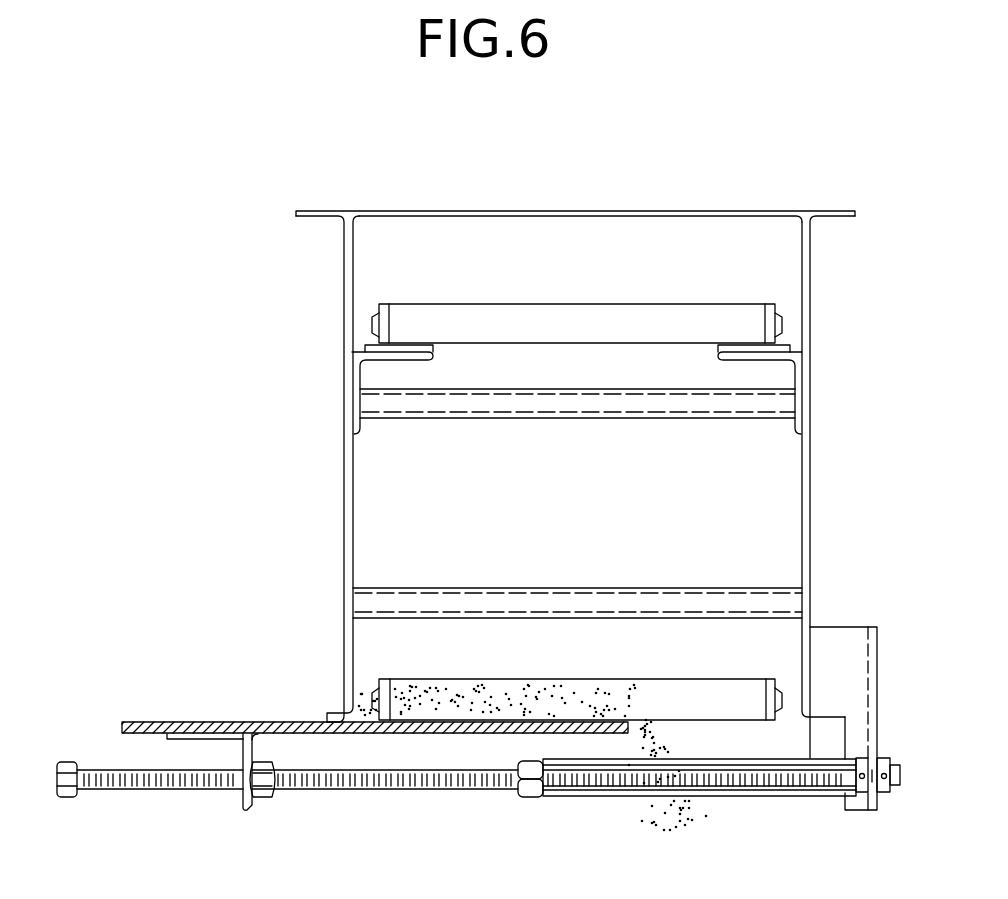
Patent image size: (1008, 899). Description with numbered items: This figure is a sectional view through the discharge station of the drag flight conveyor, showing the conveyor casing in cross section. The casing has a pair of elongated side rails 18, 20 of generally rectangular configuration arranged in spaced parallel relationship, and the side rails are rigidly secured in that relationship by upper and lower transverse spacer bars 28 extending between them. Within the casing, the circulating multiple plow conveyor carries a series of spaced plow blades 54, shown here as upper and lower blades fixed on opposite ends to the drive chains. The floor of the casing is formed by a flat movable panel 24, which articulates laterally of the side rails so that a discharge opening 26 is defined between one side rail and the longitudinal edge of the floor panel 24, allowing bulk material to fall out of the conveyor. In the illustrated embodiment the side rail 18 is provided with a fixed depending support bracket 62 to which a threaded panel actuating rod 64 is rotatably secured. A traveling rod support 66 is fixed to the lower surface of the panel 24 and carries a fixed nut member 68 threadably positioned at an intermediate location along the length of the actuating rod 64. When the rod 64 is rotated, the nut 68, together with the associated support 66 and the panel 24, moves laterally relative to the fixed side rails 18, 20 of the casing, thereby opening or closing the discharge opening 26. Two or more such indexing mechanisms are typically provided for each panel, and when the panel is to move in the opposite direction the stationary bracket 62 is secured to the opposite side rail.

The side rail 18 is at (810, 463).
The side rail 20 is at (344, 481).
The floor panel 24 is at (232, 722).
The discharge opening 26 is at (712, 748).
The transverse spacer bars 28 is at (622, 418).
The plow blade 54 is at (648, 303).
The support bracket 62 is at (872, 627).
The panel actuating rod 64 is at (415, 790).
The traveling rod support 66 is at (241, 742).
The nut member 68 is at (256, 792).